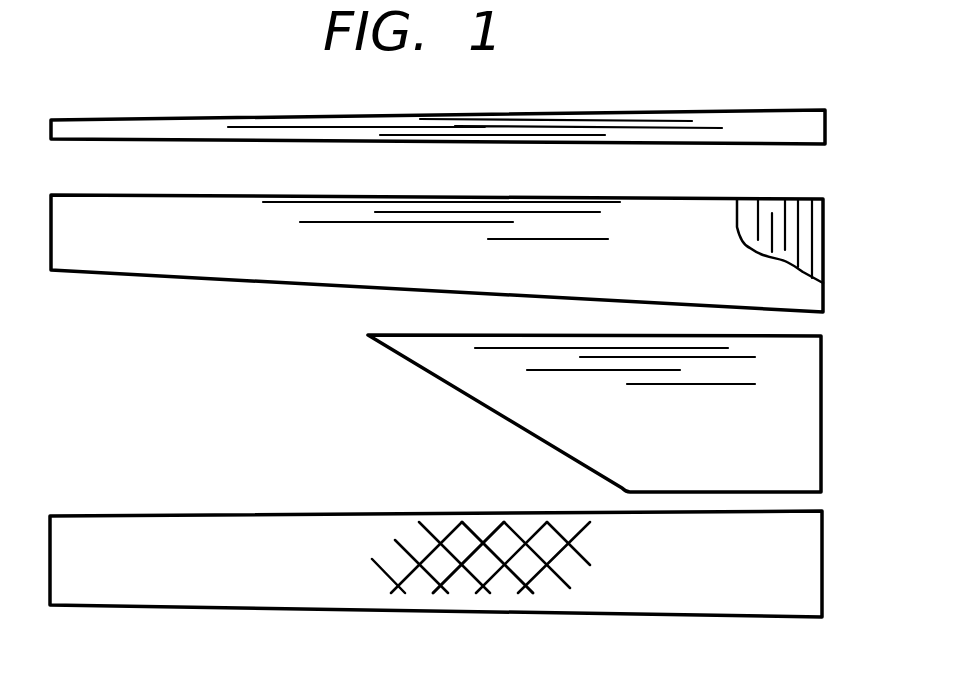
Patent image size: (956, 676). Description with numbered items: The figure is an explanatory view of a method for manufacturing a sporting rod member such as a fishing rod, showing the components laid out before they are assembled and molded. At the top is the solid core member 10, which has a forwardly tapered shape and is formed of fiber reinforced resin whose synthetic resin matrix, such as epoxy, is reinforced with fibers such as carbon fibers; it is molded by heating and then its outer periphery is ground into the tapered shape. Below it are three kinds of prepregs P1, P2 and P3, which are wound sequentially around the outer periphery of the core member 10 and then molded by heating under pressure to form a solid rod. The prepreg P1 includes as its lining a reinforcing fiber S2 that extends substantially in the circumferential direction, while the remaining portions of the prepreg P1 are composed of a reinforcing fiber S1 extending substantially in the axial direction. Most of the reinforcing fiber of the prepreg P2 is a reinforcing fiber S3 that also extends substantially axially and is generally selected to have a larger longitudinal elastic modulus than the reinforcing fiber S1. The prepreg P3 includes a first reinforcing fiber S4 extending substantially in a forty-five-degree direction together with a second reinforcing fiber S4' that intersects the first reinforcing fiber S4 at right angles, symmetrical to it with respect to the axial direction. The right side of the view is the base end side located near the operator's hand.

The solid core member 10 is at (711, 119).
The prepreg P1 is at (800, 298).
The prepreg P2 is at (795, 420).
The prepreg P3 is at (795, 568).
The reinforcing fiber S1 is at (503, 212).
The reinforcing fiber S2 is at (797, 223).
The reinforcing fiber S3 is at (590, 357).
The first reinforcing fiber S4 is at (481, 526).
The second reinforcing fiber S4' is at (483, 597).